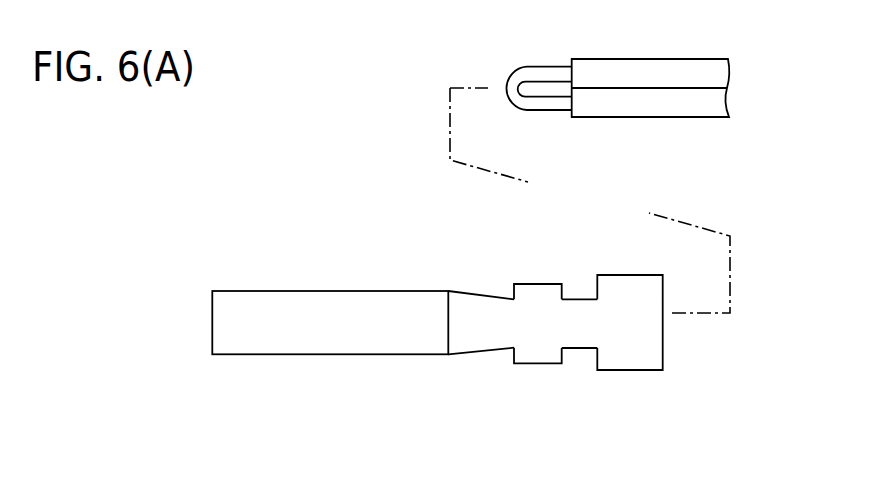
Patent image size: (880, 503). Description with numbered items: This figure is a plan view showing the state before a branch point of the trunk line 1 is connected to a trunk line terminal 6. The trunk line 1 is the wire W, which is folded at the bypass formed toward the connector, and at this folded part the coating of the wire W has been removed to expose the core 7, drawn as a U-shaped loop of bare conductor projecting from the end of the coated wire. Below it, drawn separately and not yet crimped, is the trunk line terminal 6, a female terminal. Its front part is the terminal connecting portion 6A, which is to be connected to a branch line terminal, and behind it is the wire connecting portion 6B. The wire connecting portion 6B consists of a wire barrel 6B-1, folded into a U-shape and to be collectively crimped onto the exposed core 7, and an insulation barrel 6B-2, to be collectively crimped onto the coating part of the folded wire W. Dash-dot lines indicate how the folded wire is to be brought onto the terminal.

The trunk line 1 is at (651, 64).
The core 7 is at (540, 66).
The trunk line terminal 6 is at (437, 337).
The terminal connecting portion 6A is at (327, 348).
The wire connecting portion 6B is at (555, 360).
The wire barrel 6B-1 is at (528, 359).
The insulation barrel 6B-2 is at (628, 343).